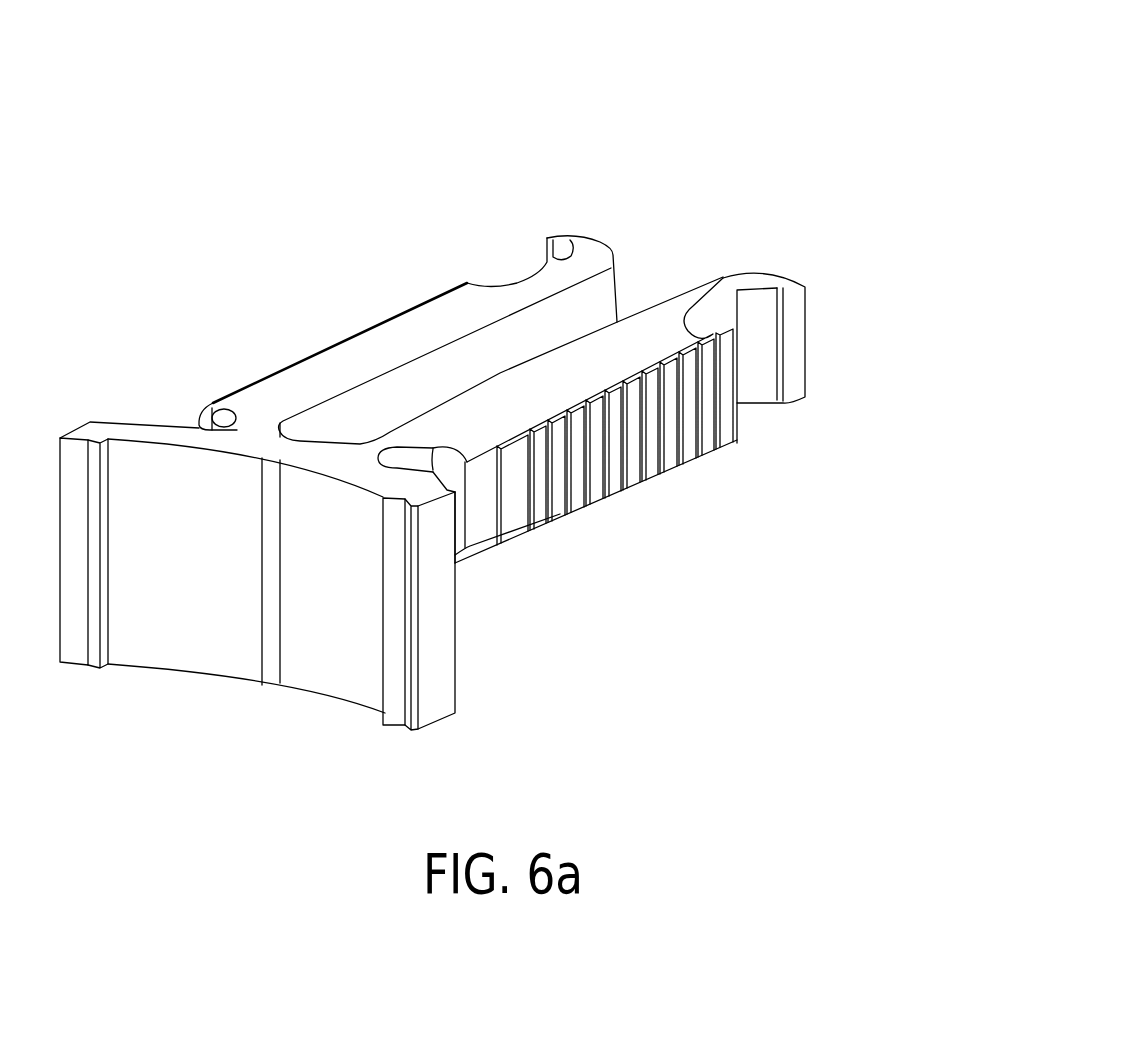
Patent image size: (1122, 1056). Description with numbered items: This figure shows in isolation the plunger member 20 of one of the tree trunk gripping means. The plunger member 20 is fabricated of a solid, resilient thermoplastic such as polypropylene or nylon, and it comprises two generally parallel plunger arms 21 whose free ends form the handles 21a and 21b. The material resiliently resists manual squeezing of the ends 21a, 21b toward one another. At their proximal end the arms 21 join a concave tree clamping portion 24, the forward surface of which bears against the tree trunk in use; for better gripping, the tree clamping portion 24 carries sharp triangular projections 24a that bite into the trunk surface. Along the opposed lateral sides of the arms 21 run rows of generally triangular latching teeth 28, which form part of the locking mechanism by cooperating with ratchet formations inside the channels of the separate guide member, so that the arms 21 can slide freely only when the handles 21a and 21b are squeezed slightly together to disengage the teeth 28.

The plunger member 20 is at (380, 264).
The plunger arms 21 is at (305, 373).
The handle end of plunger arm 21a is at (580, 246).
The handle end of plunger arm 21b is at (773, 281).
The tree clamping portion 24 is at (201, 581).
The sharp triangular projections 24a is at (273, 653).
The latching teeth 28 is at (650, 433).